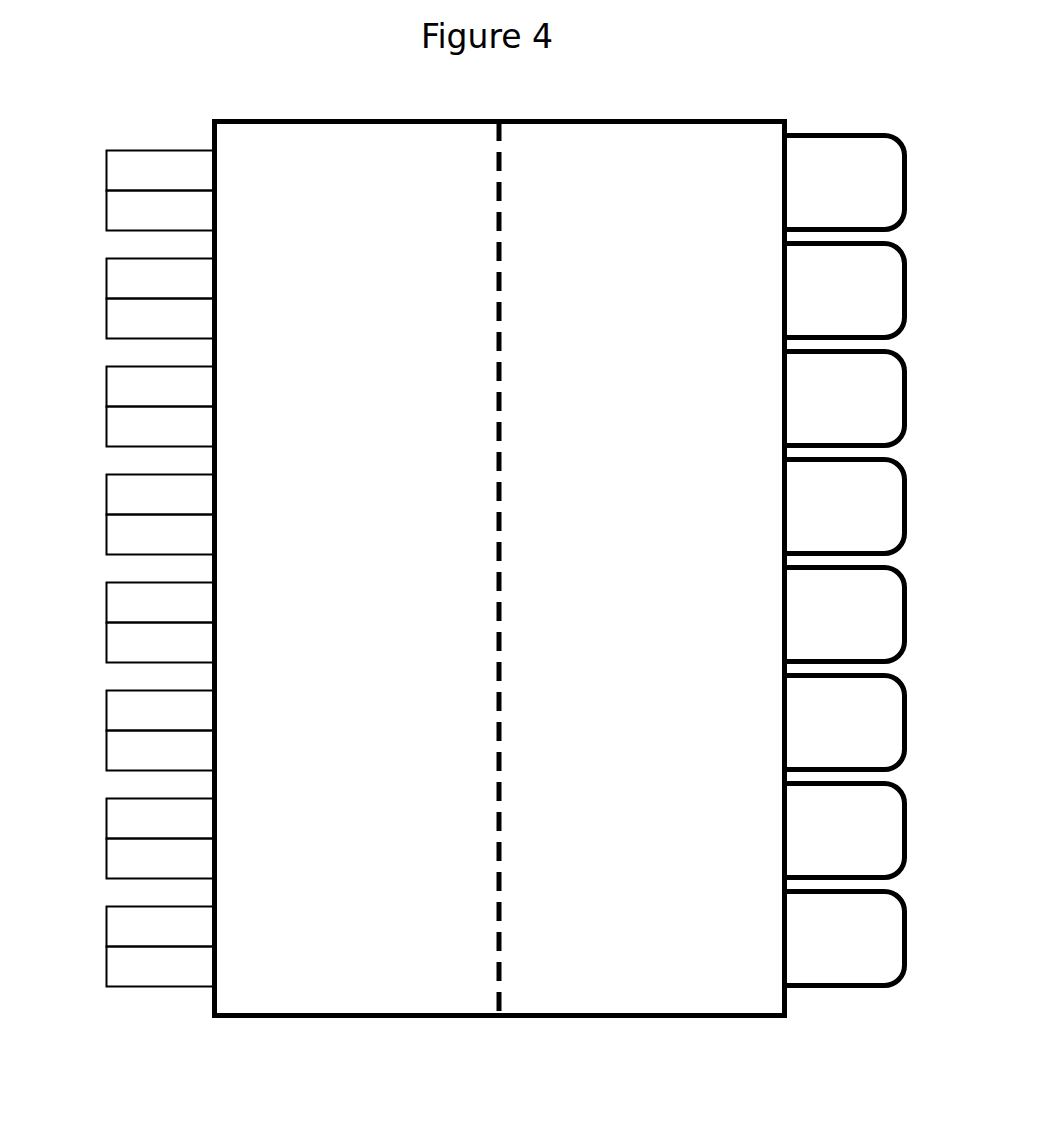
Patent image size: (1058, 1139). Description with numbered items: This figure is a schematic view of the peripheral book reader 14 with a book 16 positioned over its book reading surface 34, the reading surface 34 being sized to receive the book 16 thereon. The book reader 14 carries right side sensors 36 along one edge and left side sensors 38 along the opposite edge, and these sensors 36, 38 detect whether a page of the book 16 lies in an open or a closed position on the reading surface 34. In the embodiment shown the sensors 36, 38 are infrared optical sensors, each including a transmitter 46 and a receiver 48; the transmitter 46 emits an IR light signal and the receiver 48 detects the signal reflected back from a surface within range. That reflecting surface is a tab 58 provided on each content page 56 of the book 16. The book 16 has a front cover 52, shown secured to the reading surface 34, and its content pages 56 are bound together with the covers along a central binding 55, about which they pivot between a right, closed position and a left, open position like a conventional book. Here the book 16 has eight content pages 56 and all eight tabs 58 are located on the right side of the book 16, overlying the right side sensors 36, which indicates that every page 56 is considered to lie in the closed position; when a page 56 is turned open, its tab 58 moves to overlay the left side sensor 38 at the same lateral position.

The peripheral book reader 14 is at (452, 1017).
The book 16 is at (392, 190).
The book reading surface 34 is at (623, 120).
The right side sensors 36 is at (858, 93).
The left side sensors 38 is at (121, 93).
The transmitter 46 is at (106, 283).
The receiver 48 is at (106, 203).
The front cover 52 is at (308, 920).
The central binding 55 is at (501, 527).
The content page 56 is at (662, 920).
The tab 58 is at (908, 187).